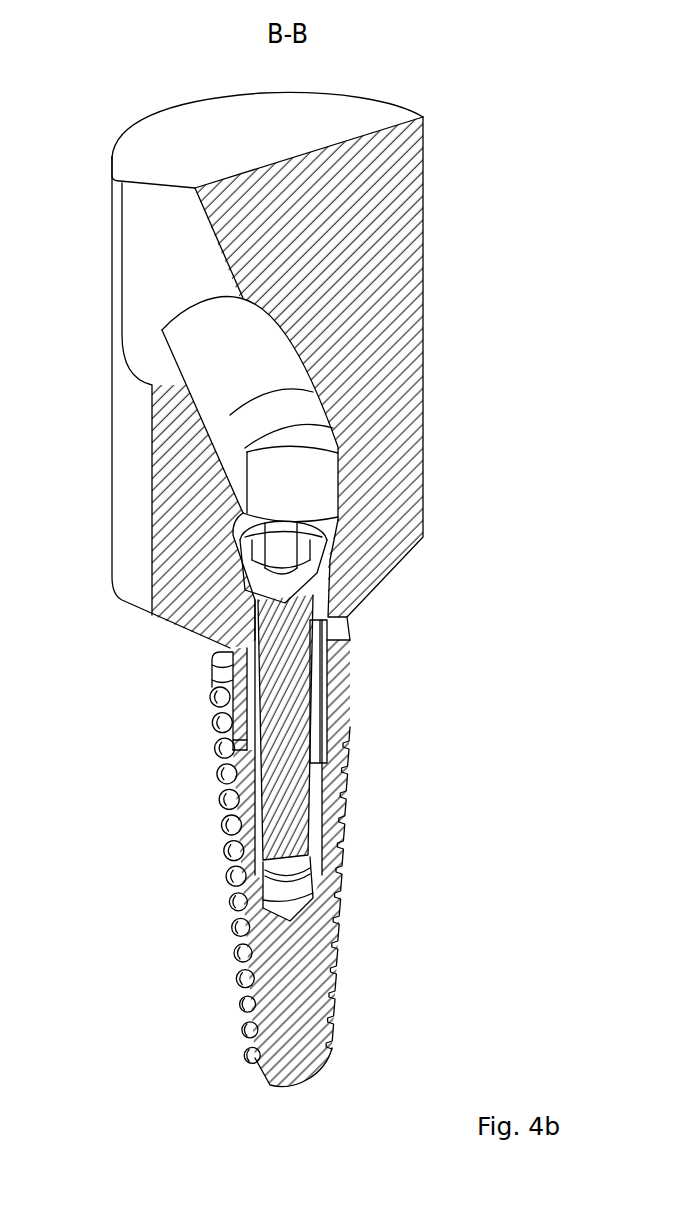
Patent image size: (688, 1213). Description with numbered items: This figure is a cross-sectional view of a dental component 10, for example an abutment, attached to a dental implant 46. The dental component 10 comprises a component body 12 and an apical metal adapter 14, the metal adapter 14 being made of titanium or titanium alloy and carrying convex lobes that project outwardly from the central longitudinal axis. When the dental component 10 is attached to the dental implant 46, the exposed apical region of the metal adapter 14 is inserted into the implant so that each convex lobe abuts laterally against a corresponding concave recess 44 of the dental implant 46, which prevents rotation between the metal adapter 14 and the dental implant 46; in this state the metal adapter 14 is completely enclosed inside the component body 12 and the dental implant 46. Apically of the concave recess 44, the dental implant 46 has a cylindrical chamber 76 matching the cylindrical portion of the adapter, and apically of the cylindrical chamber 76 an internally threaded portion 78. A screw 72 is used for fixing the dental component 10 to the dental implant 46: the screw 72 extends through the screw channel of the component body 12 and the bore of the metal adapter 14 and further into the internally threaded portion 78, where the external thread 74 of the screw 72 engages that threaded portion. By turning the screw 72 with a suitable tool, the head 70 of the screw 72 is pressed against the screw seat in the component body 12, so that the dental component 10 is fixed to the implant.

The dental component 10 is at (430, 333).
The component body 12 is at (427, 417).
The metal adapter 14 is at (327, 700).
The concave recess 44 is at (212, 675).
The dental implant 46 is at (223, 940).
The head 70 is at (320, 562).
The screw 72 is at (297, 728).
The external thread 74 is at (297, 805).
The cylindrical chamber 76 is at (218, 747).
The internally threaded portion 78 is at (263, 822).